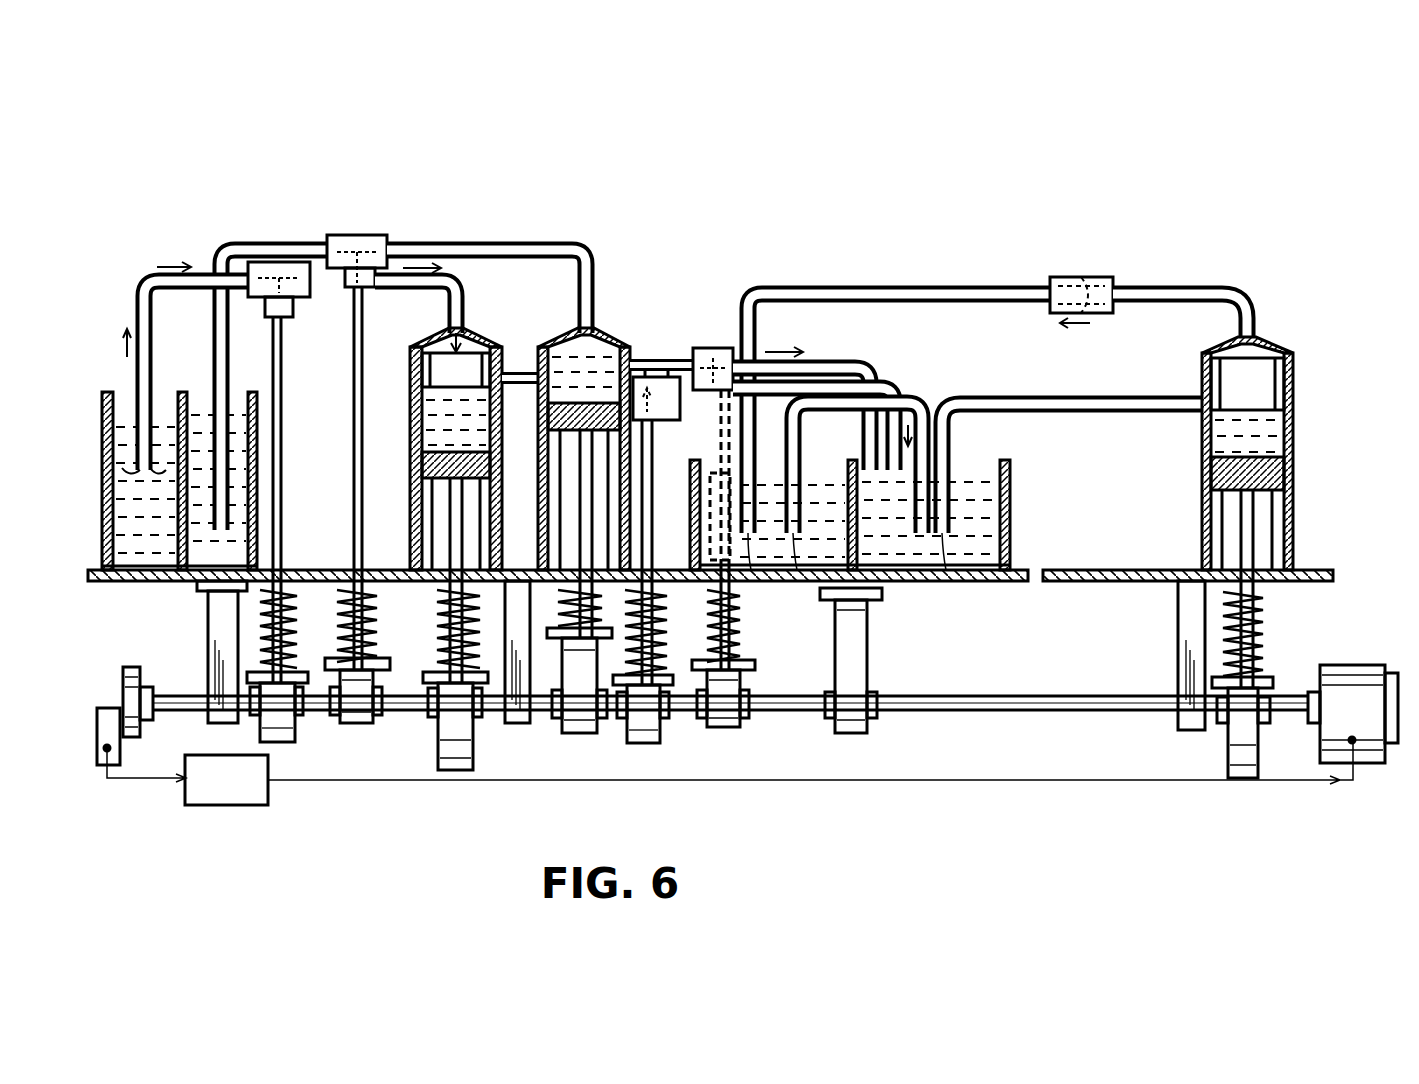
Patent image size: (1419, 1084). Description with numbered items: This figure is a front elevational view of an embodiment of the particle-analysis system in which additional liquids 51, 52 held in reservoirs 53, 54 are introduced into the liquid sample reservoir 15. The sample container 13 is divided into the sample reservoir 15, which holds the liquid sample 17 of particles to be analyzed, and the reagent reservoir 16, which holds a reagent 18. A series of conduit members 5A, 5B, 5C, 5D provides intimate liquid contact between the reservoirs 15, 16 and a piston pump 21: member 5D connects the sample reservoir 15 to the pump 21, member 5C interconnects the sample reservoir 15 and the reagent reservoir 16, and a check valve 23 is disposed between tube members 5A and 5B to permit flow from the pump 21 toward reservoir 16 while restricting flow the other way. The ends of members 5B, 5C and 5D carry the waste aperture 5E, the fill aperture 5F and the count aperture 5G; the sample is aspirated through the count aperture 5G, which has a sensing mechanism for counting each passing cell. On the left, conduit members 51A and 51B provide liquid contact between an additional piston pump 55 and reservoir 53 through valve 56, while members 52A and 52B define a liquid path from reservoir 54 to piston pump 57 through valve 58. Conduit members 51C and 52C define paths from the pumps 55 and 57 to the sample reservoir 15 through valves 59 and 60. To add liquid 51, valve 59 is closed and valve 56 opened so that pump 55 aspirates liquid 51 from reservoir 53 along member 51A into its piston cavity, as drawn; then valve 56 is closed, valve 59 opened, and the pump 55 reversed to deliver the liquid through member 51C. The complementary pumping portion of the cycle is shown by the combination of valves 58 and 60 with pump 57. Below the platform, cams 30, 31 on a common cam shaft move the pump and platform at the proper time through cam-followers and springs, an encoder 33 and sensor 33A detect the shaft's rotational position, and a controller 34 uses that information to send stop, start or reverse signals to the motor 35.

The reservoir 53 is at (98, 393).
The additional liquid 51 is at (163, 417).
The conduit member 51A is at (173, 272).
The conduit member 51B is at (424, 288).
The conduit member 51C is at (840, 377).
The additional liquid 52 is at (233, 413).
The conduit member 52A is at (281, 243).
The conduit member 52B is at (505, 243).
The conduit member 52C is at (873, 360).
The reservoir 54 is at (267, 425).
The additional piston pump 55 is at (413, 473).
The valve 56 is at (297, 300).
The piston pump 57 is at (537, 483).
The valve 58 is at (367, 235).
The valve 59 is at (650, 377).
The valve 60 is at (720, 348).
The conduit member 5A is at (1220, 290).
The conduit member 5B is at (975, 288).
The conduit member 5C is at (925, 400).
The conduit member 5D is at (1148, 400).
The waste aperture 5E is at (756, 584).
The fill aperture 5F is at (795, 584).
The count aperture 5G is at (945, 586).
The sample container 13 is at (973, 461).
The sample reservoir 15 is at (1012, 484).
The reagent reservoir 16 is at (692, 464).
The liquid sample 17 is at (985, 531).
The reagent 18 is at (707, 500).
The piston pump 21 is at (1293, 378).
The check valve 23 is at (1095, 277).
The cam 30 is at (853, 733).
The cam 31 is at (1250, 778).
The encoder 33 is at (124, 678).
The sensor 33A is at (95, 752).
The controller 34 is at (248, 797).
The motor 35 is at (1370, 750).